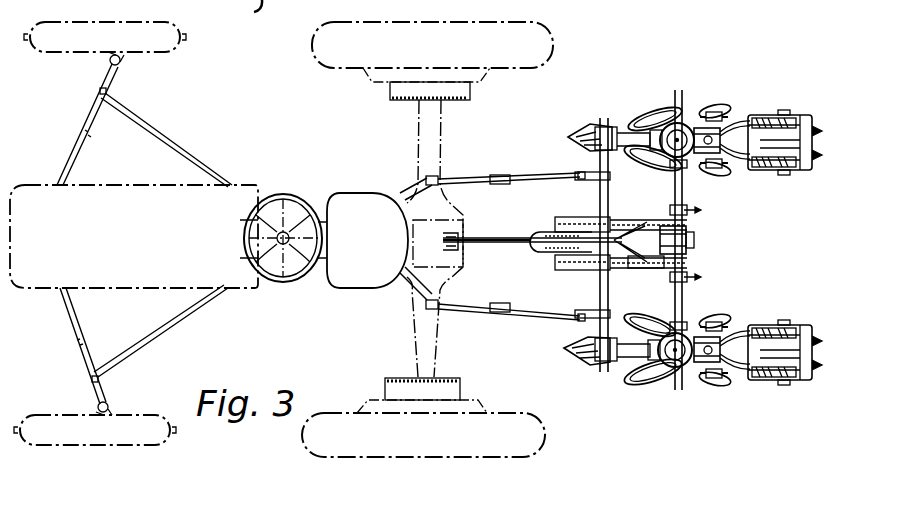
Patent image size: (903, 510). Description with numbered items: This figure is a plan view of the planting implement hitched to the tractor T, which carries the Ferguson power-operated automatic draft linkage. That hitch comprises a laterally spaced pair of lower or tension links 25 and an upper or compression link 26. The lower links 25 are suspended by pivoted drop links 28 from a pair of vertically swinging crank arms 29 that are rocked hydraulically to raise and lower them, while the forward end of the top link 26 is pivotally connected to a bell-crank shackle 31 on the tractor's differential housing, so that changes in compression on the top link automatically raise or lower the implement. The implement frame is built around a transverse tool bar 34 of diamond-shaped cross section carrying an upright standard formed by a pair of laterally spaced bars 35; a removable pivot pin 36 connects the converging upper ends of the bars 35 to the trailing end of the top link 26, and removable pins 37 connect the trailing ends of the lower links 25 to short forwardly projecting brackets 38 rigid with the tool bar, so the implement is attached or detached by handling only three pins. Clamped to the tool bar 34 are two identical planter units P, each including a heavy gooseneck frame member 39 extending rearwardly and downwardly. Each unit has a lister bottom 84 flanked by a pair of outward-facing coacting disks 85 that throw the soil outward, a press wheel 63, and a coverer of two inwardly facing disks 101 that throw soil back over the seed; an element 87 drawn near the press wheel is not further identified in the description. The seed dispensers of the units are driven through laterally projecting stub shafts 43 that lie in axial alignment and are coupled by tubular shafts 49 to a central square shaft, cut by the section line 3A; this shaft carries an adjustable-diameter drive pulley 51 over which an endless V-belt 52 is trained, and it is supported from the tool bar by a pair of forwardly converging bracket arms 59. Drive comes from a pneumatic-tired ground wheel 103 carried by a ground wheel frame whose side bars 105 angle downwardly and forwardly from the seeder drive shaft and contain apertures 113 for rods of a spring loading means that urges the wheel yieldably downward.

The tractor T is at (124, 182).
The lower draft links 25 is at (527, 174).
The upper draft link 26 is at (477, 237).
The drop links 28 is at (470, 176).
The crank arms 29 is at (400, 195).
The shackle 31 is at (443, 247).
The transverse tool bar 34 is at (600, 283).
The standard bars 35 is at (592, 217).
The pivot pin 36 is at (555, 257).
The pins 37 is at (580, 173).
The brackets 38 is at (580, 180).
The gooseneck frame member 39 is at (623, 130).
The section line 3A is at (705, 246).
The stub shaft 43 is at (700, 183).
The tubular shafts 49 is at (675, 202).
The adjustable diameter drive pulley 51 is at (697, 252).
The V-belt 52 is at (745, 230).
The bracket arms 59 is at (630, 238).
The press wheel 63 is at (815, 141).
The lister bottom 84 is at (550, 385).
The coacting disks 85 is at (641, 180).
The disc hub 87 is at (682, 0).
The coverer disks 101 is at (727, 107).
The ground wheel 103 is at (528, 247).
The ground wheel frame side bars 105 is at (556, 232).
The apertures 113 is at (637, 268).
The planter unit P is at (688, 119).